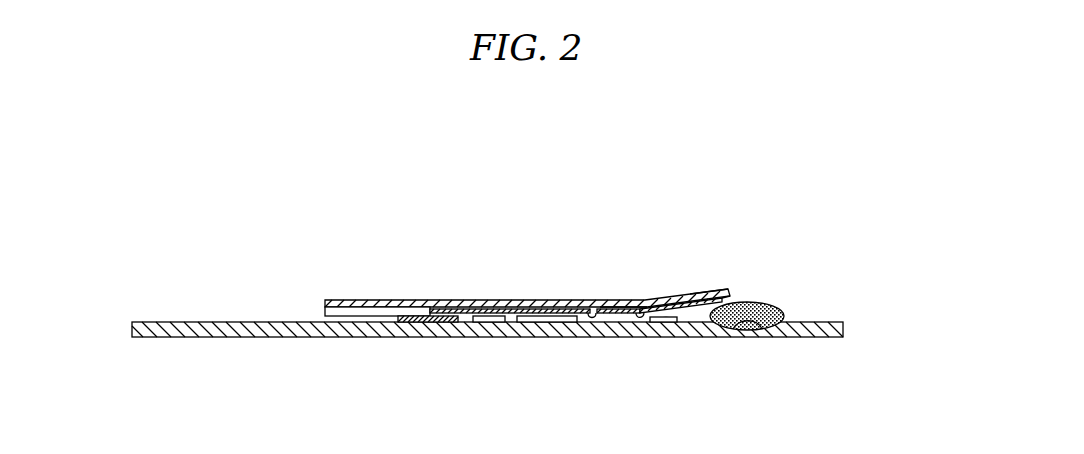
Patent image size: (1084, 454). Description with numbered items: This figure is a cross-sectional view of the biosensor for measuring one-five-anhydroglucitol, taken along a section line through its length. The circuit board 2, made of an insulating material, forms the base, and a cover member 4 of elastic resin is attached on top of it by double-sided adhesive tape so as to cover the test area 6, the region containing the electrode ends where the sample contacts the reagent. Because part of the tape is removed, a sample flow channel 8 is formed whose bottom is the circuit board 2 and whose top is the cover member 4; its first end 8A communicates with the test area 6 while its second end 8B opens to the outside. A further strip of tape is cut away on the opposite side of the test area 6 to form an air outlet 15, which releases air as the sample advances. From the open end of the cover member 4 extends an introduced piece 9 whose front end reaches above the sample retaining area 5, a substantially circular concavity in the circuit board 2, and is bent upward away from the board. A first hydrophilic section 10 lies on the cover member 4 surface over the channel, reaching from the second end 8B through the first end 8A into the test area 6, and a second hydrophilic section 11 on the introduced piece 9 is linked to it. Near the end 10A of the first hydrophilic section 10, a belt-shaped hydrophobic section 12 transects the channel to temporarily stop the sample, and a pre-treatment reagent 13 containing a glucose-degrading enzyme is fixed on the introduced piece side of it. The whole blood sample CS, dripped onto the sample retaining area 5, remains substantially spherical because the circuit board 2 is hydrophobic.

The circuit board 2 is at (308, 331).
The cover member 4 is at (452, 300).
The sample retaining area 5 is at (755, 331).
The test area 6 is at (507, 324).
The sample flow channel 8 is at (600, 322).
The first end 8A is at (548, 307).
The second end 8B is at (650, 323).
The introduced piece 9 is at (697, 294).
The first hydrophilic section 10 is at (585, 308).
The end of first hydrophilic section 10A is at (650, 306).
The second hydrophilic section 11 is at (737, 300).
The hydrophobic section 12 is at (618, 303).
The pre-treatment reagent 13 is at (676, 323).
The air outlet 15 is at (333, 313).
The whole blood sample CS is at (772, 305).